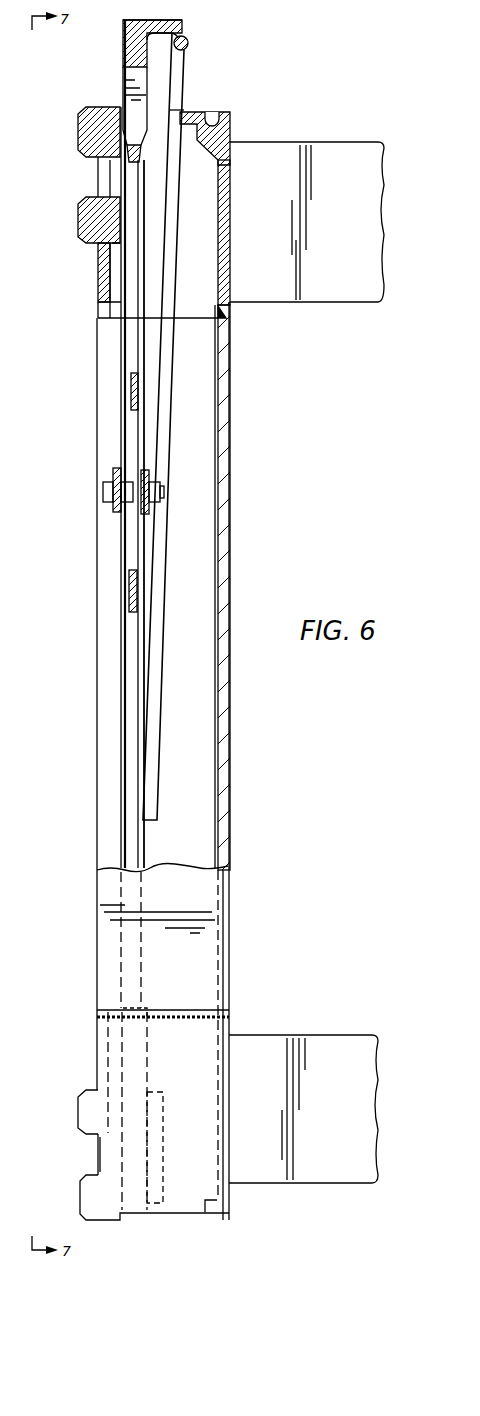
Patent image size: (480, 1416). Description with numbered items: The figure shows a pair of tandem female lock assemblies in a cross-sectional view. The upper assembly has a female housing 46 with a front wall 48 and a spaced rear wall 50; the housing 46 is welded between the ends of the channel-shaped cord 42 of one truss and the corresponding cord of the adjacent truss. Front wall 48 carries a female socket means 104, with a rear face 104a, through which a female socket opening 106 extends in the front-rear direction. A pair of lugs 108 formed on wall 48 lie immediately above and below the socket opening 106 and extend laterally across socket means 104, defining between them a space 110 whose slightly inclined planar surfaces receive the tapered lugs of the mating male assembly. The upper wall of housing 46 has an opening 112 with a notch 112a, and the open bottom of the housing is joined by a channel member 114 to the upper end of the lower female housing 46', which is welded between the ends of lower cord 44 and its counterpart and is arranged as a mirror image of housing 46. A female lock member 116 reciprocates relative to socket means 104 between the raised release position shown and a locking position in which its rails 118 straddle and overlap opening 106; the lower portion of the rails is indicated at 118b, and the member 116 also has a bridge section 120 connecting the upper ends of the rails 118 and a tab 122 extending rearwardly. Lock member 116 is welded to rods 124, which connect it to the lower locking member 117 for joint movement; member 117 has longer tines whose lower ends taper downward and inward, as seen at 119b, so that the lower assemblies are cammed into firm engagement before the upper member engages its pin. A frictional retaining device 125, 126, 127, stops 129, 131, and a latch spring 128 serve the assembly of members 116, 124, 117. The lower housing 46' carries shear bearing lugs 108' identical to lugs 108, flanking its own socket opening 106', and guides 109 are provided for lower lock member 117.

The female lock member 116 is at (118, 22).
The tab 122 is at (183, 25).
The bridge section 120 is at (190, 45).
The rails 118 is at (150, 95).
The rod shoulder 118b is at (140, 135).
The opening 112 is at (185, 113).
The notch 112a is at (222, 128).
The channel-shaped cord 42 is at (358, 141).
The female socket means 104 is at (120, 106).
The lugs 108 is at (78, 165).
The space 110 is at (120, 150).
The female socket opening 106 is at (70, 180).
The front wall 48 is at (100, 285).
The rear face 104a is at (104, 310).
The rear wall 50 is at (226, 250).
The female housing 46 is at (189, 331).
The stop 129 is at (138, 396).
The frictional retaining device 126 is at (148, 476).
The frictional retaining device 125 is at (113, 475).
The frictional retaining device 127 is at (103, 489).
The stop 131 is at (126, 510).
The rods 124 is at (133, 618).
The latch spring 128 is at (158, 572).
The channel member 114 is at (229, 705).
The locking member 117 is at (128, 1040).
The female housing 46' is at (194, 1015).
The lower cord 44 is at (370, 1034).
The shear bearing lugs 108' is at (125, 1155).
The lower spacer 106' is at (66, 1154).
The tapering of front and rear surfaces of rails 119b is at (125, 1132).
The guides 109 is at (162, 1160).